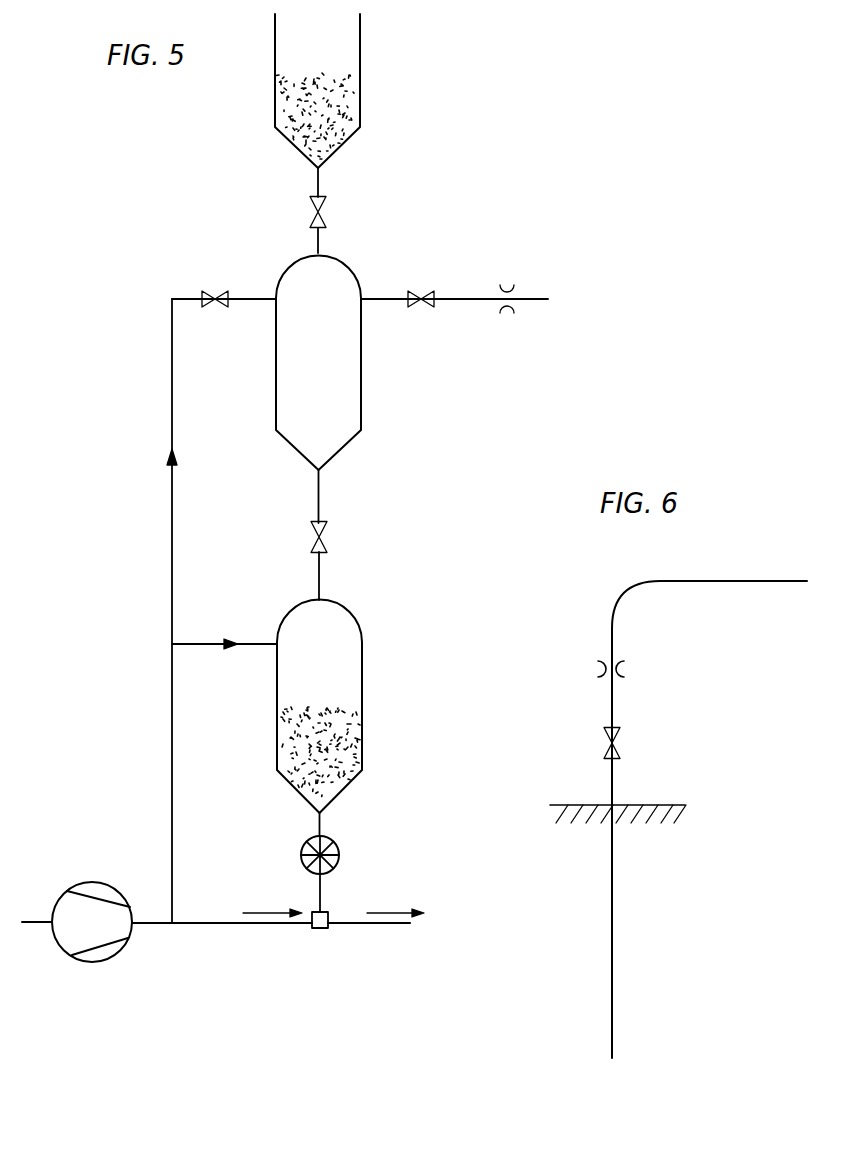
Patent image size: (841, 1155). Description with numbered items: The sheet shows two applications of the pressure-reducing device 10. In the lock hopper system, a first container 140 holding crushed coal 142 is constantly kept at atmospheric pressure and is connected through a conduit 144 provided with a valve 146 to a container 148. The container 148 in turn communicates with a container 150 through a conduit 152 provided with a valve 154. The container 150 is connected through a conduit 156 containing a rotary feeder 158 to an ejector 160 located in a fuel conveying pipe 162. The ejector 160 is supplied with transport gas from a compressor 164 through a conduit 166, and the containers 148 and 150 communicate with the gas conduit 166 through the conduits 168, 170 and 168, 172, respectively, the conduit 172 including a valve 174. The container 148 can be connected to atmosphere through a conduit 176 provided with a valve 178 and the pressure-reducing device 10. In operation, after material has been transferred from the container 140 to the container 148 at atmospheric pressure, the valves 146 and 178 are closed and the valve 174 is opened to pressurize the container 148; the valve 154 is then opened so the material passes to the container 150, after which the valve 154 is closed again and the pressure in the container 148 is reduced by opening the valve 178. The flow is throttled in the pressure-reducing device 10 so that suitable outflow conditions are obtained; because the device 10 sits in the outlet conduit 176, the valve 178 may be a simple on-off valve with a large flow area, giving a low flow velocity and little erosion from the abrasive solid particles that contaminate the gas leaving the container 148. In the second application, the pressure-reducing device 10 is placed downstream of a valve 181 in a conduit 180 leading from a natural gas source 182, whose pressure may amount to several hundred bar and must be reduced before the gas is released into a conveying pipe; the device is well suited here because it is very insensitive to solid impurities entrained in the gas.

In FIG. 5, the pressure-reducing device 10 is at (505, 285).
In FIG. 6, the pressure-reducing device 10 is at (627, 669).
In FIG. 5, the first container 140 is at (360, 95).
In FIG. 5, the crushed coal 142 is at (325, 90).
In FIG. 5, the conduit 144 is at (322, 182).
In FIG. 5, the valve 146 is at (327, 222).
In FIG. 5, the container 148 is at (361, 382).
In FIG. 5, the container 150 is at (363, 678).
In FIG. 5, the conduit 152 is at (320, 503).
In FIG. 5, the valve 154 is at (327, 551).
In FIG. 5, the conduit 156 is at (322, 826).
In FIG. 5, the rotary feeder 158 is at (340, 855).
In FIG. 5, the ejector 160 is at (327, 929).
In FIG. 5, the fuel conveying pipe 162 is at (397, 925).
In FIG. 5, the compressor 164 is at (97, 962).
In FIG. 5, the conduit 166 is at (240, 925).
In FIG. 5, the conduit 168 is at (172, 550).
In FIG. 5, the conduit 170 is at (220, 648).
In FIG. 5, the conduit 172 is at (247, 298).
In FIG. 5, the valve 174 is at (203, 291).
In FIG. 5, the conduit 176 is at (467, 300).
In FIG. 5, the valve 178 is at (434, 291).
In FIG. 6, the conduit 180 is at (610, 634).
In FIG. 6, the valve 181 is at (620, 746).
In FIG. 6, the natural gas source 182 is at (588, 782).